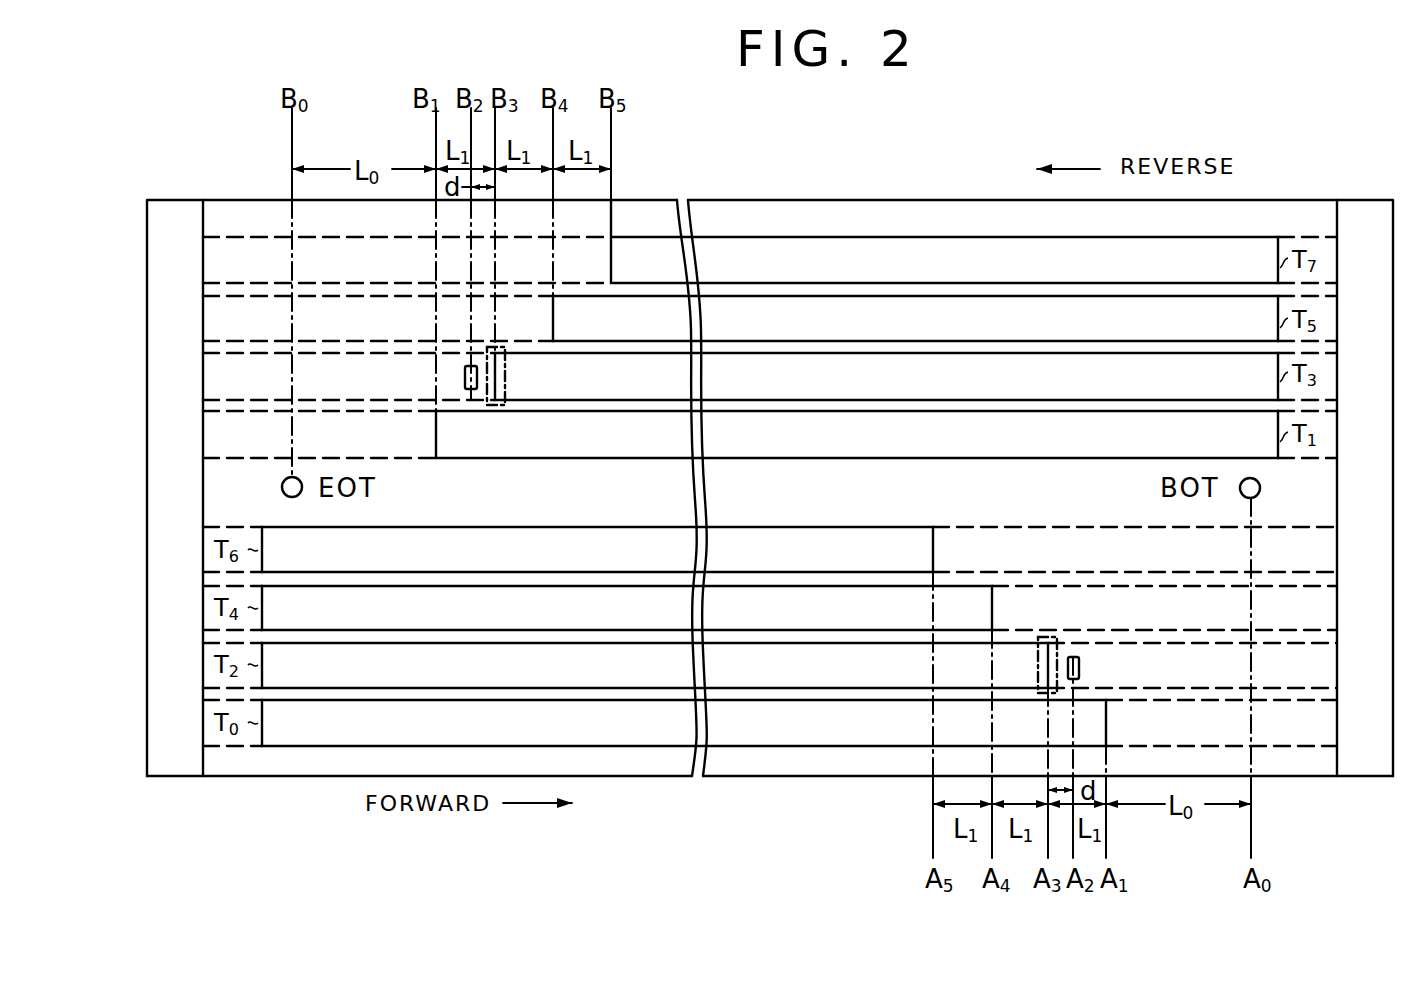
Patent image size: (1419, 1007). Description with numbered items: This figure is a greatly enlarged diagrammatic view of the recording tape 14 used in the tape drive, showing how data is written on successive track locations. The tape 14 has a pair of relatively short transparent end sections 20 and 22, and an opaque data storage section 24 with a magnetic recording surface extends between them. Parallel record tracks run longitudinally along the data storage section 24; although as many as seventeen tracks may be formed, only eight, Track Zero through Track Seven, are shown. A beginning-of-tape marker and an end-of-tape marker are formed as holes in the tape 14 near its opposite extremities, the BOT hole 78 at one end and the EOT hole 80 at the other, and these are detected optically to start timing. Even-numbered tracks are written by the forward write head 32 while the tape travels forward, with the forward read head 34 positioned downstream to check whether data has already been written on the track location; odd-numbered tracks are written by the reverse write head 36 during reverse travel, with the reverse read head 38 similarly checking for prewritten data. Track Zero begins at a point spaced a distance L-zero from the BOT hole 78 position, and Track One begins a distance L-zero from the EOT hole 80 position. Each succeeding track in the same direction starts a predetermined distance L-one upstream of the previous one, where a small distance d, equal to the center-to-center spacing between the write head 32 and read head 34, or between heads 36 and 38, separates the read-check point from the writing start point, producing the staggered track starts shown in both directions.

The recording tape 14 is at (120, 230).
The transparent end section 20 is at (172, 207).
The transparent end section 22 is at (1368, 200).
The data storage section 24 is at (875, 200).
The forward write head 32 is at (1044, 637).
The forward read head 34 is at (1077, 655).
The reverse write head 36 is at (503, 348).
The reverse read head 38 is at (468, 362).
The BOT hole 78 is at (1262, 488).
The EOT hole 80 is at (280, 487).